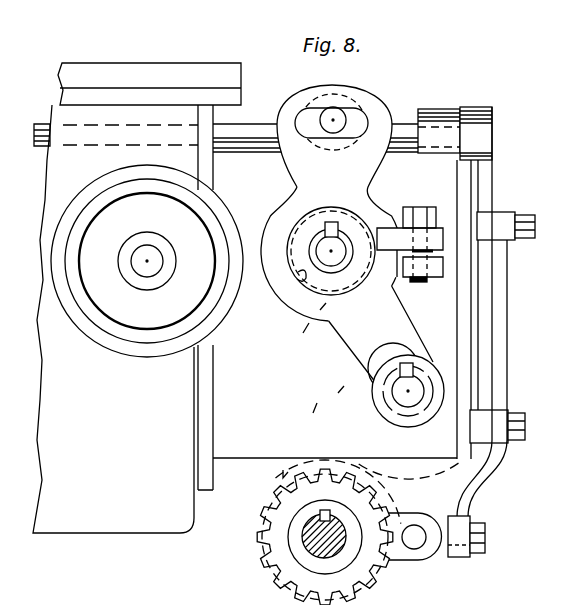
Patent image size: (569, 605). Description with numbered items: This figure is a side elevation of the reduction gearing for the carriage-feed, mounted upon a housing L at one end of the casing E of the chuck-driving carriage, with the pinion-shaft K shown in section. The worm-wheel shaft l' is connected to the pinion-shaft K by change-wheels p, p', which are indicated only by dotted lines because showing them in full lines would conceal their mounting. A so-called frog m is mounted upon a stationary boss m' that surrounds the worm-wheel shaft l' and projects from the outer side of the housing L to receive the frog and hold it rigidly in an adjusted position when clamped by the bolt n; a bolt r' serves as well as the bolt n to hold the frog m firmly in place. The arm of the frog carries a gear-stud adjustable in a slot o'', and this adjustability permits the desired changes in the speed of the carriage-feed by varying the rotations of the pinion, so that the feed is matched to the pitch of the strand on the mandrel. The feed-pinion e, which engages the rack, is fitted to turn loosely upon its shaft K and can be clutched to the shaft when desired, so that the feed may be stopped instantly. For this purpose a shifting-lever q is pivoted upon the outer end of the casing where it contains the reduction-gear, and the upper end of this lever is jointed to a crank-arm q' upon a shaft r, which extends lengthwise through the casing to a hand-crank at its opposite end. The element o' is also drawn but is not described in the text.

The casing E is at (72, 235).
The frog m is at (324, 234).
The stationary boss m' is at (347, 231).
The worm-wheel shaft l' is at (337, 270).
The bolt r' is at (345, 106).
The shaft r is at (471, 133).
The bolt n is at (422, 279).
The slot o'' is at (373, 368).
The eccentric hub / pin o' is at (395, 391).
The crank-arm q' is at (496, 309).
The shifting-lever q is at (488, 332).
The housing L is at (340, 447).
The change-wheel p is at (276, 298).
The change-wheel p' is at (359, 391).
The feed-pinion e is at (257, 537).
The pinion-shaft K is at (312, 543).